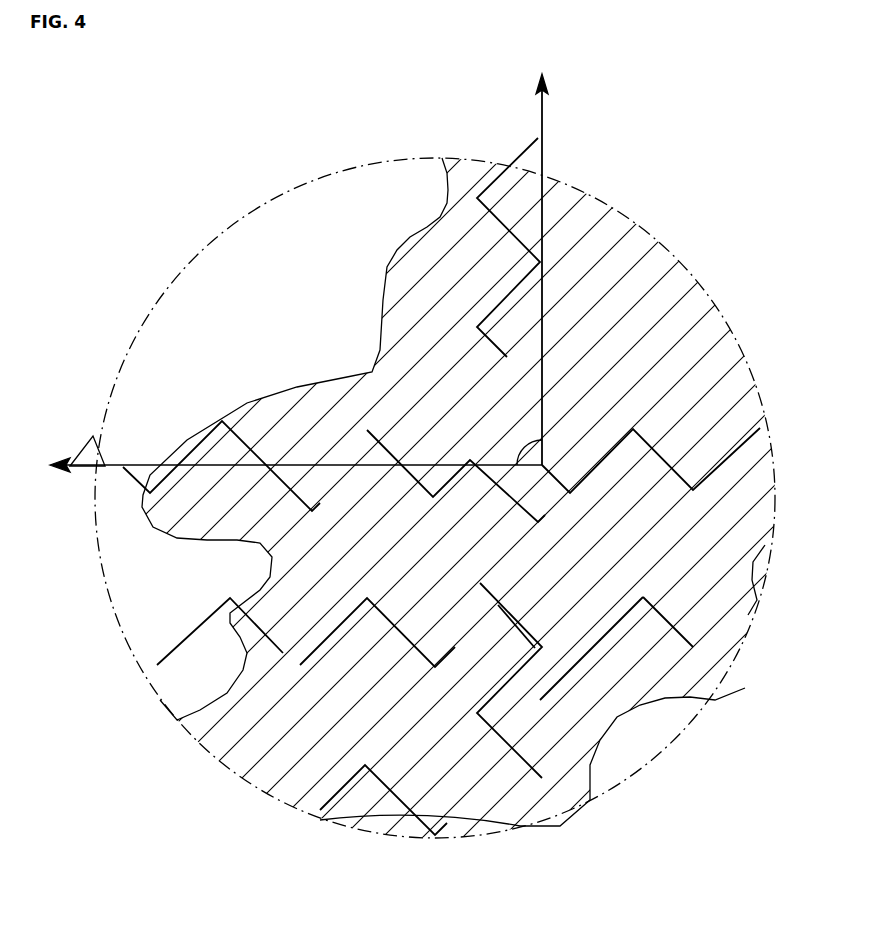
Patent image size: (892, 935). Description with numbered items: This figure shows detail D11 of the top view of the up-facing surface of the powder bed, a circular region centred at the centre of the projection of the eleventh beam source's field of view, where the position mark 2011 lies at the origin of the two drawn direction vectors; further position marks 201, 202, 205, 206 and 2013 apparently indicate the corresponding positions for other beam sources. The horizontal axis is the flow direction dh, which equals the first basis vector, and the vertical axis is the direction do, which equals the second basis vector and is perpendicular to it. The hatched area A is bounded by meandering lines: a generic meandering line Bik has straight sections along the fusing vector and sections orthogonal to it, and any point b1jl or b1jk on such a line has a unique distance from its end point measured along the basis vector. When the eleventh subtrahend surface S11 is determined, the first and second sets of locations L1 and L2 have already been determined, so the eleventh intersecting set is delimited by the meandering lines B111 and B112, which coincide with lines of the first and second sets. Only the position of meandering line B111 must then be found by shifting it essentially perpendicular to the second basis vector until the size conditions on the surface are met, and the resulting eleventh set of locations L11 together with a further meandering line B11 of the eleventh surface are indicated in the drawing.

The point 20_1 201 is at (318, 298).
The point 20_2 202 is at (312, 690).
The point 20_5 205 is at (573, 300).
The point 20_6 206 is at (575, 690).
The point 20_11 2011 is at (563, 475).
The point 20_13 2013 is at (702, 497).
The detail D11 is at (247, 212).
The first set of locations L1 is at (400, 277).
The second set of locations L2 is at (397, 695).
The eleventh set of locations L11 is at (147, 532).
The area A is at (607, 250).
The meandering line Bik is at (517, 233).
The meandering line B111 is at (84, 432).
The meandering line B112 is at (188, 648).
The meandering line of the eleventh subtrahend surface B11 is at (538, 523).
The eleventh subtrahend surface S11 is at (687, 667).
The flow direction dh is at (225, 452).
The direction vector do is at (540, 100).
The point on meandering line b1jl is at (128, 465).
The point on meandering line b1jk is at (362, 375).